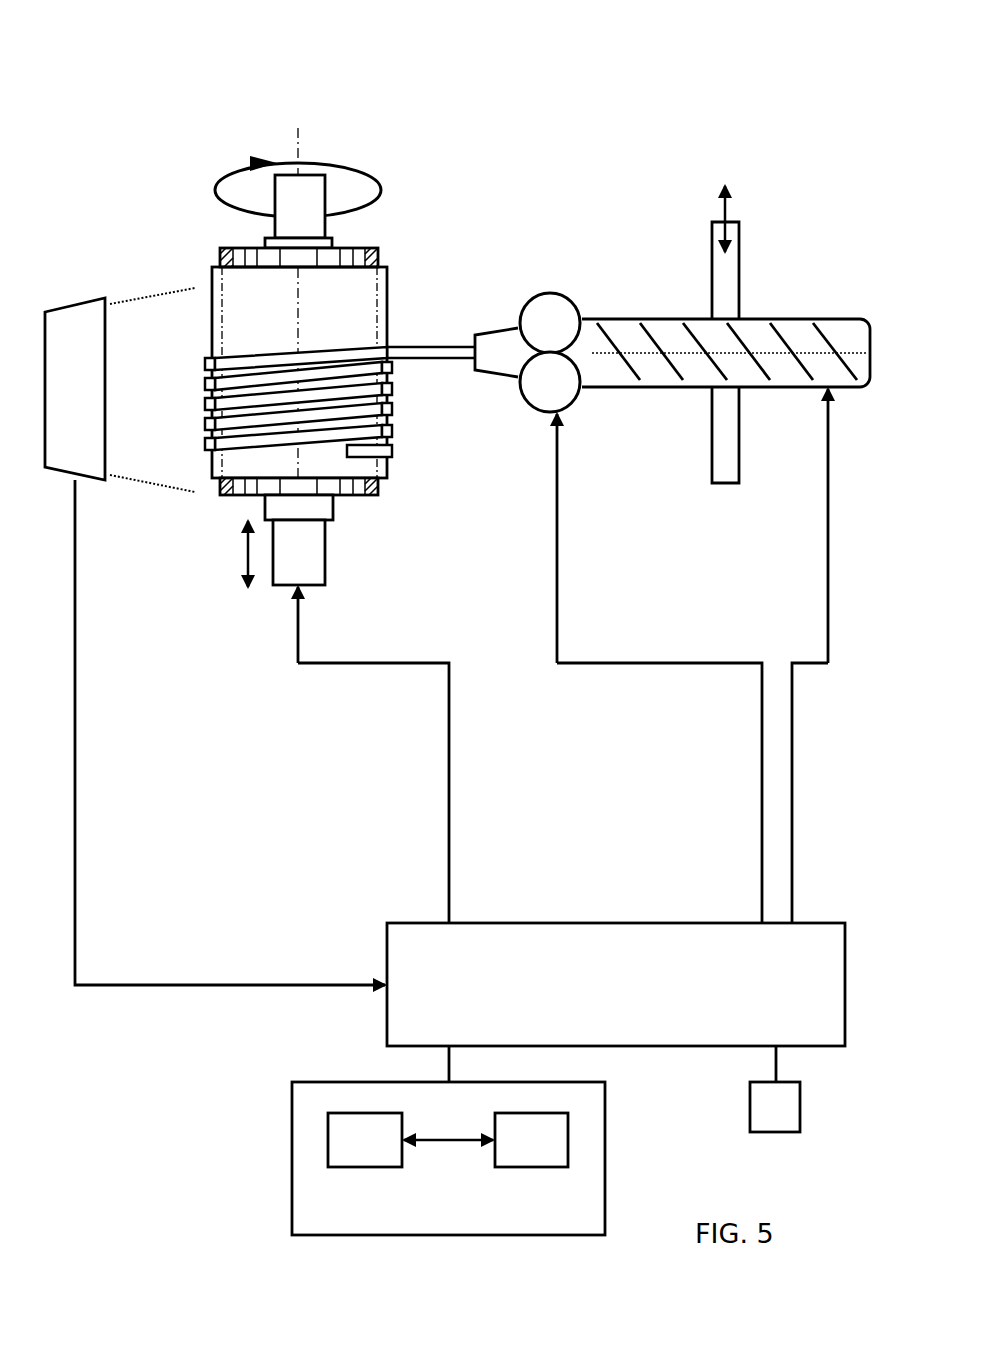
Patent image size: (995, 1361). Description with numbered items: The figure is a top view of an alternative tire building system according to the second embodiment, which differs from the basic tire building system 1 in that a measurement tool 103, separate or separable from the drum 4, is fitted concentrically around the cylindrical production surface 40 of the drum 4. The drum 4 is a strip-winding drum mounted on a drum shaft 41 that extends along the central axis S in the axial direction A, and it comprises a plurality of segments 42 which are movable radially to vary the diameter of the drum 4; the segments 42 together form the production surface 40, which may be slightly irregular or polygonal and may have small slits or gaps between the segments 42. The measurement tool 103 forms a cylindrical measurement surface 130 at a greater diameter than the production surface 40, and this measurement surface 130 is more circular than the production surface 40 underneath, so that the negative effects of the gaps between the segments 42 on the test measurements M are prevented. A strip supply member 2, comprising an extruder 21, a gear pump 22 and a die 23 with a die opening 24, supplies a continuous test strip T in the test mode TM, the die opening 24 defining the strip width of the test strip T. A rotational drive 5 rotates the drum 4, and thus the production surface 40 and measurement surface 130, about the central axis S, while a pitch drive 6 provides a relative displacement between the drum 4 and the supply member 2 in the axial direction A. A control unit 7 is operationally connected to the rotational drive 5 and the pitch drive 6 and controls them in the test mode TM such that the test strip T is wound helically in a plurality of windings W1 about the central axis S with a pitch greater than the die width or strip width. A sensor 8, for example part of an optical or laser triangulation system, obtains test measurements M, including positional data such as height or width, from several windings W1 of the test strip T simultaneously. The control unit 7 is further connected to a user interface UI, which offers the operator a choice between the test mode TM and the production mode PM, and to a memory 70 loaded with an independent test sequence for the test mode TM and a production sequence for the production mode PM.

The tire building system 1 is at (96, 98).
The strip supply member 2 is at (645, 320).
The drum 4 is at (374, 248).
The rotational drive 5 is at (325, 511).
The pitch drive 6 is at (318, 187).
The control unit 7 is at (608, 988).
The sensor 8 is at (66, 397).
The extruder 21 is at (793, 323).
The gear pump 22 is at (551, 308).
The die 23 is at (507, 367).
The die opening 24 is at (462, 346).
The cylindrical production surface 40 is at (380, 490).
The drum shaft 41 is at (333, 243).
The segments 42 is at (270, 257).
The memory 70 is at (760, 1121).
The measurement tool 103 is at (230, 287).
The cylindrical measurement surface 130 is at (380, 287).
The windings W1 is at (205, 383).
The test strip T is at (428, 345).
The central axis S is at (298, 320).
The axial direction A is at (485, 372).
The test measurements M is at (204, 732).
The user interface UI is at (433, 1224).
The test mode TM is at (348, 1153).
The production mode PM is at (514, 1153).